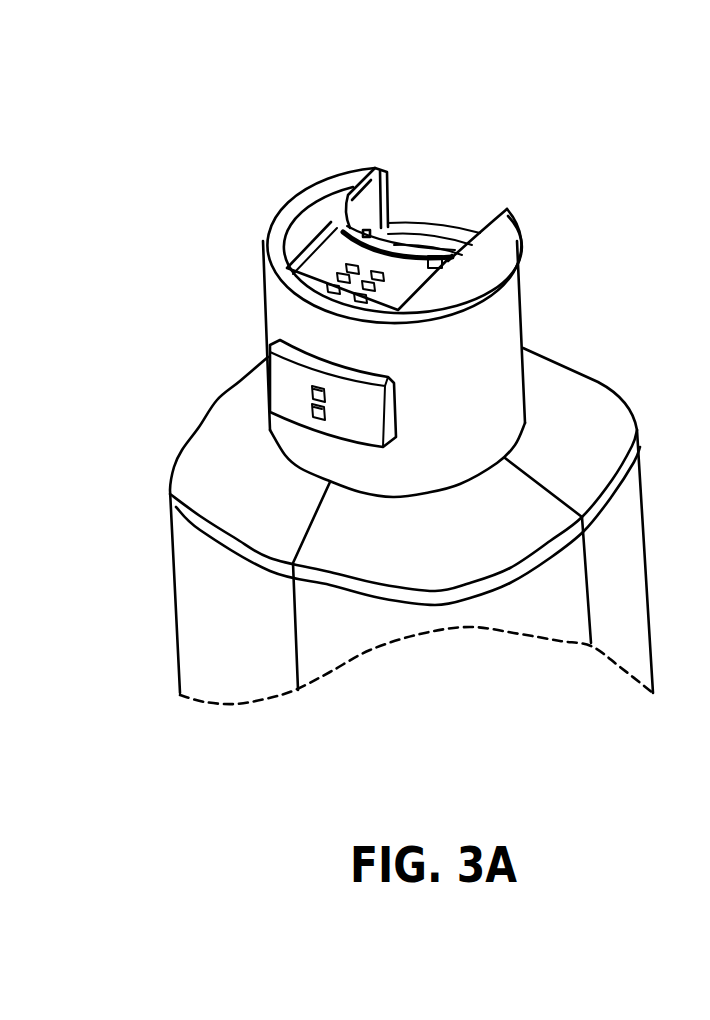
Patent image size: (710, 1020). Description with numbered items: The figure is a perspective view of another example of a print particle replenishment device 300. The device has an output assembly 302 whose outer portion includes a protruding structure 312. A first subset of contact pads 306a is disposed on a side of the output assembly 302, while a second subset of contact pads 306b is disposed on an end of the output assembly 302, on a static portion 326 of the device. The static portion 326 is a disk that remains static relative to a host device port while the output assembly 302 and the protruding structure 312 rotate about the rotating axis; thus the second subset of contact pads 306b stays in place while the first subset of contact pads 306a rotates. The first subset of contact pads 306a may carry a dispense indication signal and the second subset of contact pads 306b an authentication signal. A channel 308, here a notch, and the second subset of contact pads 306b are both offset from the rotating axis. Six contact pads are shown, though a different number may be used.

The print particle replenishment device 300 is at (374, 372).
The output assembly 302 is at (363, 308).
The first subset of contact pads 306a is at (312, 412).
The second subset of contact pads 306b is at (345, 268).
The channel 308 is at (485, 226).
The protruding structure 312 is at (272, 343).
The static portion 326 is at (323, 203).